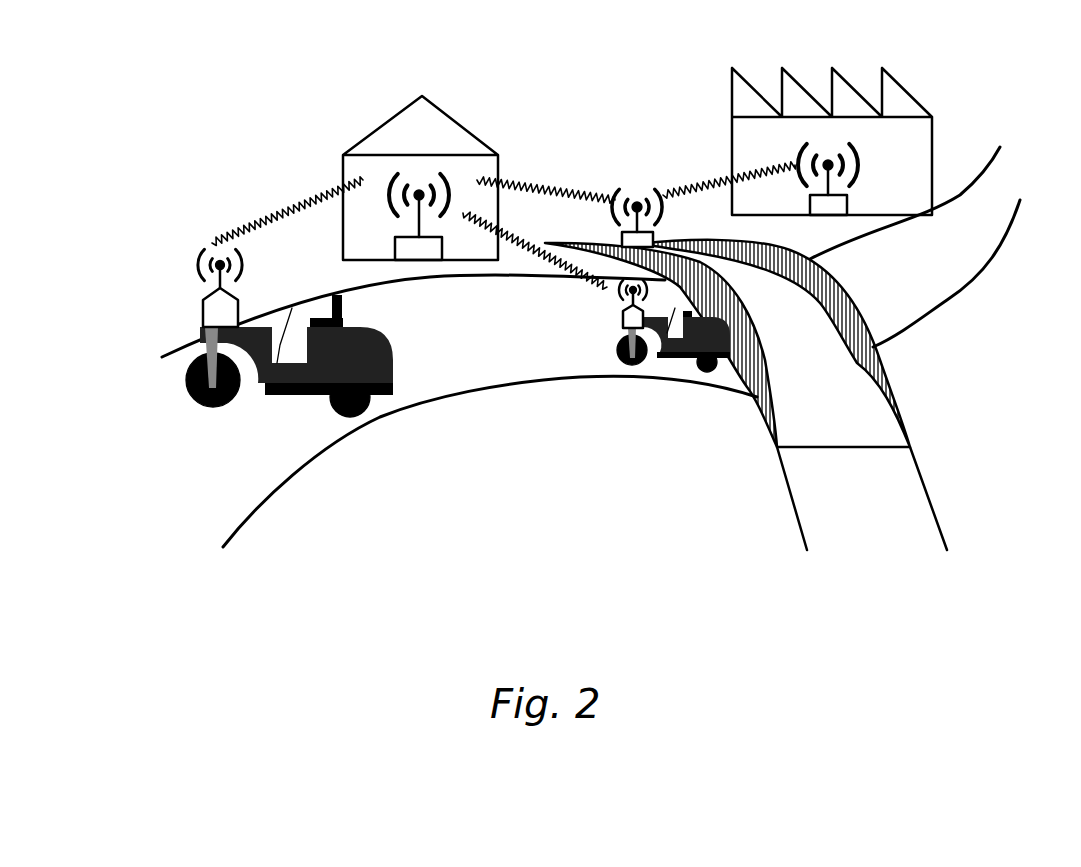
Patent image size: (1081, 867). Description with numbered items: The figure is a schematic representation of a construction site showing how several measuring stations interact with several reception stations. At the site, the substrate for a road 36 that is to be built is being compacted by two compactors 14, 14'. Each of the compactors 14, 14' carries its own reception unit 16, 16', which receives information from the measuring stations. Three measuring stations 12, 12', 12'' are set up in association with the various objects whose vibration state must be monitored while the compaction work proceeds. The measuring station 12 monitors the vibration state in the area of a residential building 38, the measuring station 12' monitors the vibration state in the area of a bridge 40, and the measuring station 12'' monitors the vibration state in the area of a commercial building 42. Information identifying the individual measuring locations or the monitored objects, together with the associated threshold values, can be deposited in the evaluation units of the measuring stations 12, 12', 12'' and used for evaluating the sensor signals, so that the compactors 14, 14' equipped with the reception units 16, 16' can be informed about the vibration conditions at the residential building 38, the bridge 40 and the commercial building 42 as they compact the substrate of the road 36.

The measuring station 12 is at (429, 257).
The measuring station 12' is at (623, 174).
The measuring station 12'' is at (927, 167).
The compactor 14 is at (323, 385).
The compactor 14' is at (673, 394).
The reception unit 16 is at (166, 297).
The reception unit 16' is at (587, 369).
The road 36 is at (947, 290).
The residential building 38 is at (358, 148).
The bridge 40 is at (893, 380).
The commercial building 42 is at (937, 127).